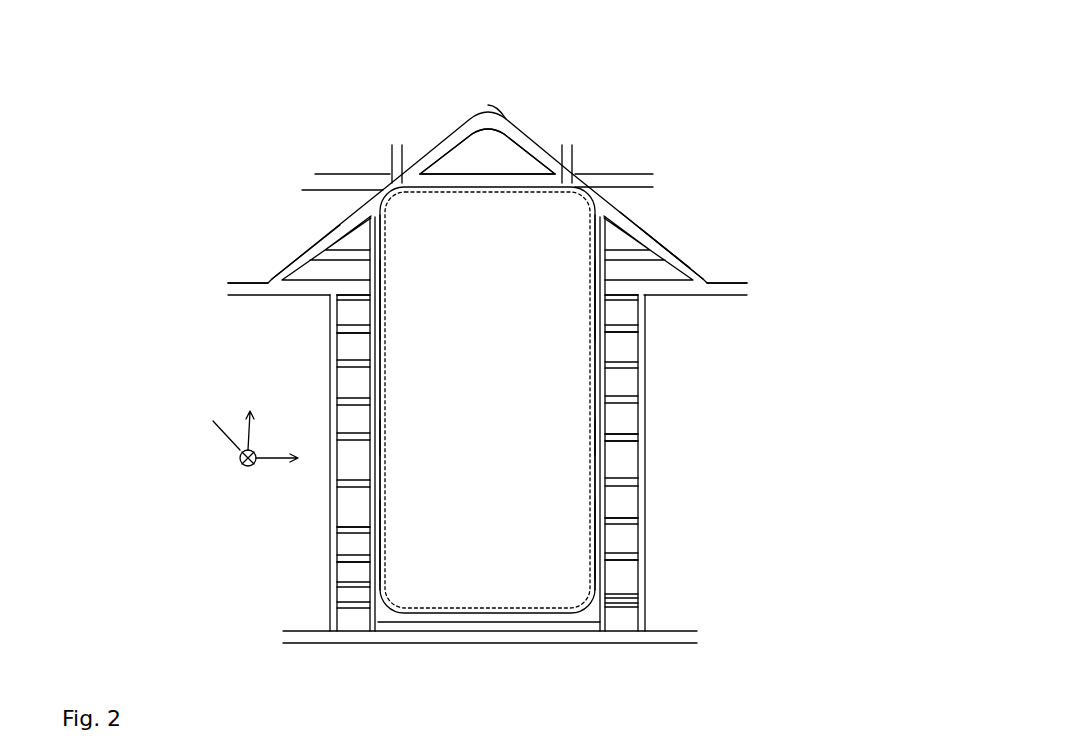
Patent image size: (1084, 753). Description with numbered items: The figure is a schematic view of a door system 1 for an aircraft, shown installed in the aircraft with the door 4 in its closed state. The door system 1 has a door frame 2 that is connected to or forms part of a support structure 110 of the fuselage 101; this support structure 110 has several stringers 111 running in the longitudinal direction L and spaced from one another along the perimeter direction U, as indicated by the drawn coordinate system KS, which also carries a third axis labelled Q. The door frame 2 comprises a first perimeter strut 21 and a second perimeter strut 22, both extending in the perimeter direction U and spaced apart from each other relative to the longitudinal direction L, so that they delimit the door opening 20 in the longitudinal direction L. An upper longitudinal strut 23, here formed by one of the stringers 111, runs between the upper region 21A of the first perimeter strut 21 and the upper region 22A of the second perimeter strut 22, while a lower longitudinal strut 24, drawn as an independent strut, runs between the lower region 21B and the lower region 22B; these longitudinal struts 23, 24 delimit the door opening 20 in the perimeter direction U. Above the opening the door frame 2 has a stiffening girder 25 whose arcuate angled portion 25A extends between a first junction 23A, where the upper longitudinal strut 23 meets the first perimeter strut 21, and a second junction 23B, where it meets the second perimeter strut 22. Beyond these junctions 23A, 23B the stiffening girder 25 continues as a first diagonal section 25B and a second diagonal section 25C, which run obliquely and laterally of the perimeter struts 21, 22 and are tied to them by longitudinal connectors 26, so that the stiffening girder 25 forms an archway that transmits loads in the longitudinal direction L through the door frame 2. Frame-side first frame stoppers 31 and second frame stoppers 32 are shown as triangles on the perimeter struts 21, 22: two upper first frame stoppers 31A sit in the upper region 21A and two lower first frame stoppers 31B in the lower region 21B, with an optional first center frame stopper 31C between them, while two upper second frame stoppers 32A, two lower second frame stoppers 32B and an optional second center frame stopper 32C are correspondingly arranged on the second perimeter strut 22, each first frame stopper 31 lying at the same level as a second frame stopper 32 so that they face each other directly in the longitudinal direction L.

The door system 1 is at (676, 205).
The door frame 2 is at (625, 416).
The door 4 is at (470, 190).
The door opening 20 is at (585, 178).
The first perimeter strut 21 is at (373, 582).
The upper region of the first perimeter strut 21A is at (352, 307).
The lower region of the first perimeter strut 21B is at (350, 538).
The second perimeter strut 22 is at (600, 465).
The upper region of the second perimeter strut 22A is at (625, 305).
The lower region of the second perimeter strut 22B is at (625, 538).
The upper longitudinal strut 23 is at (448, 178).
The first junction 23A is at (390, 184).
The second junction 23B is at (577, 178).
The lower longitudinal strut 24 is at (398, 622).
The stiffening girder 25 is at (481, 113).
The angled portion 25A is at (505, 103).
The first diagonal section 25B is at (280, 262).
The second diagonal section 25C is at (642, 222).
The longitudinal connector 26 is at (333, 245).
The first frame stopper 31 is at (384, 280).
The upper first frame stoppers 31A is at (436, 296).
The lower first frame stoppers 31B is at (435, 536).
The first center frame stopper 31C is at (432, 432).
The second frame stopper 32 is at (593, 290).
The upper second frame stoppers 32A is at (562, 305).
The lower second frame stoppers 32B is at (563, 602).
The second center frame stopper 32C is at (568, 455).
The fuselage 101 is at (748, 270).
The support structure 110 is at (233, 268).
The stringers 111 is at (322, 188).
The coordinate system KS is at (190, 462).
The longitudinal direction L is at (278, 462).
The perimeter direction U is at (254, 428).
The transverse direction Q is at (214, 421).